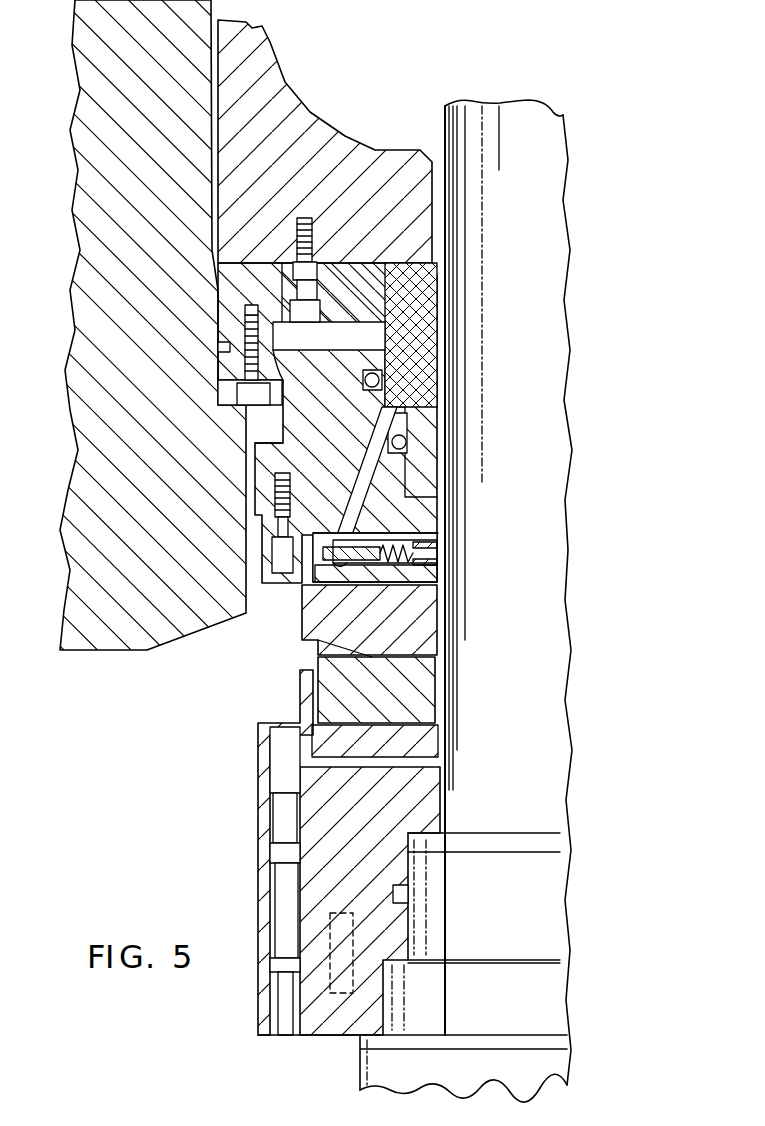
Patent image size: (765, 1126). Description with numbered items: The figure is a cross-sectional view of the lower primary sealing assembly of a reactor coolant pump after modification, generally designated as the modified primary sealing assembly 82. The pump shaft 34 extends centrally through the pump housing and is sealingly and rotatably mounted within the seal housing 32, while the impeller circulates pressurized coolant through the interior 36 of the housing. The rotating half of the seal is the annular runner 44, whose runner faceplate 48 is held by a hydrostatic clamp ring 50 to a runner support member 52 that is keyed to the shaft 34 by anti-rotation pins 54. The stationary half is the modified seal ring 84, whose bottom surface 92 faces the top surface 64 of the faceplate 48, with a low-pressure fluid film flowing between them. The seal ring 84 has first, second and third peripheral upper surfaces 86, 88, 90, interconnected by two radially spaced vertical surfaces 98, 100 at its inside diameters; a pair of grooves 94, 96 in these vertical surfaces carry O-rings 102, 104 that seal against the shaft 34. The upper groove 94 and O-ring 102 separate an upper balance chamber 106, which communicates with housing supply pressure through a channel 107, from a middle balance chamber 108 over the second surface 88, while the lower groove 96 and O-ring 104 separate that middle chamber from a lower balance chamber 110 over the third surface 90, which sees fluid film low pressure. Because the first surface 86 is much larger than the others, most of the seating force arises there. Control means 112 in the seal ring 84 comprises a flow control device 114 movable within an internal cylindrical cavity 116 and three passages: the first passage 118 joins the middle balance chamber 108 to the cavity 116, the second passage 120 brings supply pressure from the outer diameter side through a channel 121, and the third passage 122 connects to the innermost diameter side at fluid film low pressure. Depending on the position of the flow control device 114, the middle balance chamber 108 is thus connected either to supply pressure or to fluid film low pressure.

The seal housing 32 is at (75, 375).
The pump shaft 34 is at (540, 152).
The interior 36 is at (126, 710).
The annular runner 44 is at (474, 680).
The runner faceplate 48 is at (425, 707).
The hydrostatic clamp ring 50 is at (300, 700).
The runner support member 52 is at (337, 868).
The anti-rotation pins 54 is at (353, 945).
The top surface 64 is at (405, 650).
The modified primary sealing assembly 82 is at (525, 530).
The modified seal ring 84 is at (450, 602).
The first peripheral upper surface 86 is at (343, 340).
The second peripheral upper surface 88 is at (398, 400).
The third peripheral upper surface 90 is at (427, 480).
The bottom surface 92 is at (430, 607).
The upper groove 94 is at (395, 285).
The lower groove 96 is at (440, 398).
The upper vertical surface 98 is at (400, 312).
The lower vertical surface 100 is at (423, 450).
The upper O-ring 102 is at (405, 338).
The lower O-ring 104 is at (433, 427).
The upper balance chamber 106 is at (325, 350).
The channel 107 is at (296, 392).
The middle balance chamber 108 is at (410, 362).
The lower balance chamber 110 is at (433, 463).
The control means 112 is at (337, 500).
The flow control device 114 is at (400, 530).
The internal cylindrical cavity 116 is at (318, 608).
The first passage 118 is at (283, 440).
The second passage 120 is at (345, 556).
The channel 121 is at (302, 628).
The third passage 122 is at (423, 552).